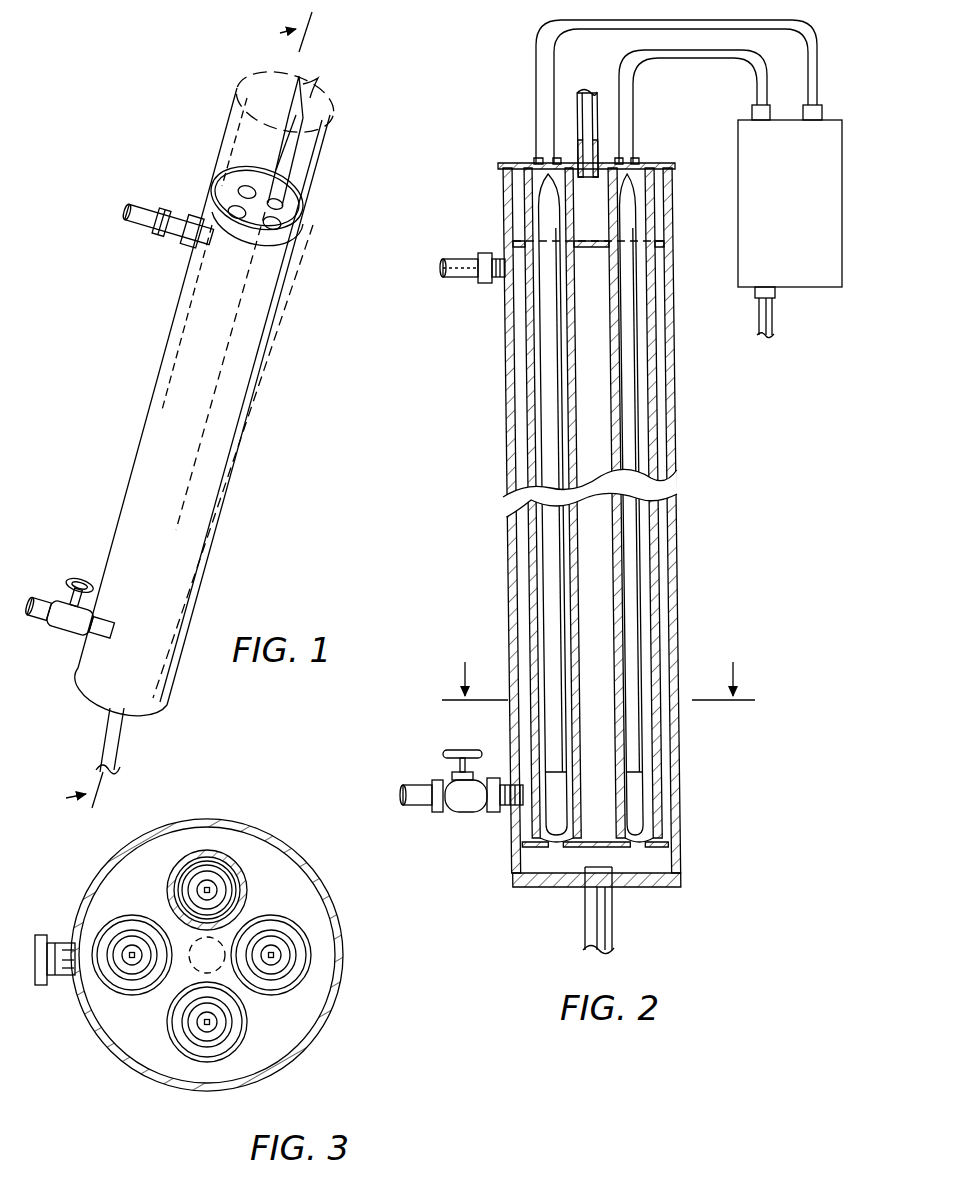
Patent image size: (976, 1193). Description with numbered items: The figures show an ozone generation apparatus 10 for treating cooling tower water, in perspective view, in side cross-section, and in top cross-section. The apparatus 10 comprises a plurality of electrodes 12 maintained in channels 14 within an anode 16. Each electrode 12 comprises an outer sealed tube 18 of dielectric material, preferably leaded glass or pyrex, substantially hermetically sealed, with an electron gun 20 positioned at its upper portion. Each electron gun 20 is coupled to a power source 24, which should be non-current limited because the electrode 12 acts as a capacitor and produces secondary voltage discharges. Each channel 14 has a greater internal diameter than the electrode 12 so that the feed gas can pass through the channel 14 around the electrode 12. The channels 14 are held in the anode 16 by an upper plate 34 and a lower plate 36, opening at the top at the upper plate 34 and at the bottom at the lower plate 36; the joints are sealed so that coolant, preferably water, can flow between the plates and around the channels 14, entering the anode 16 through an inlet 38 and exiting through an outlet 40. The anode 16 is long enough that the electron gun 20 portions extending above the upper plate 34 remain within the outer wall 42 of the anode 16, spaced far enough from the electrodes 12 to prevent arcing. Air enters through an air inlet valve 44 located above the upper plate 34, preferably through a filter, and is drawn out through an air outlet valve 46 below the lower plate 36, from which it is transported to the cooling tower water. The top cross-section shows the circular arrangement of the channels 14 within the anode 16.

In FIG. 1, the apparatus 10 is at (146, 296).
In FIG. 2, the apparatus 10 is at (740, 430).
In FIG. 3, the apparatus 10 is at (275, 816).
In FIG. 1, the electrode 12 is at (306, 152).
In FIG. 1, the channel 14 is at (272, 222).
In FIG. 1, the anode 16 is at (245, 473).
In FIG. 2, the anode 16 is at (494, 422).
In FIG. 3, the anode 16 is at (350, 896).
In FIG. 1, the outer sealed tube 18 is at (283, 148).
In FIG. 3, the outer sealed tube 18 is at (201, 956).
In FIG. 1, the electron gun 20 is at (303, 112).
In FIG. 2, the power source 24 is at (803, 289).
In FIG. 2, the upper plate 34 is at (586, 246).
In FIG. 2, the lower plate 36 is at (618, 847).
In FIG. 2, the inlet 38 is at (420, 785).
In FIG. 2, the outlet 40 is at (465, 258).
In FIG. 2, the outer wall 42 is at (672, 190).
In FIG. 2, the air inlet valve 44 is at (598, 97).
In FIG. 2, the air outlet valve 46 is at (612, 920).